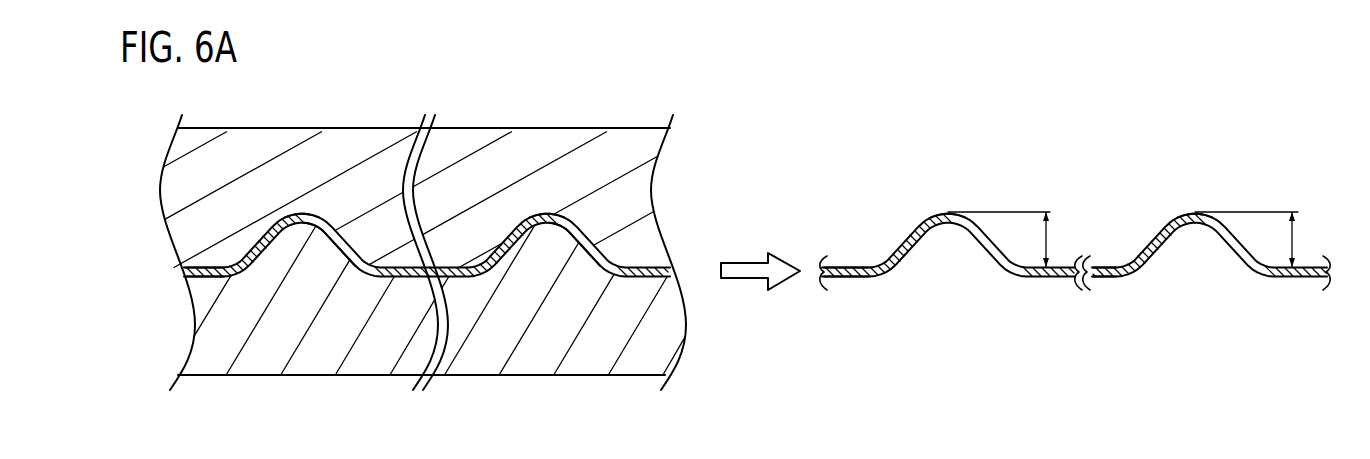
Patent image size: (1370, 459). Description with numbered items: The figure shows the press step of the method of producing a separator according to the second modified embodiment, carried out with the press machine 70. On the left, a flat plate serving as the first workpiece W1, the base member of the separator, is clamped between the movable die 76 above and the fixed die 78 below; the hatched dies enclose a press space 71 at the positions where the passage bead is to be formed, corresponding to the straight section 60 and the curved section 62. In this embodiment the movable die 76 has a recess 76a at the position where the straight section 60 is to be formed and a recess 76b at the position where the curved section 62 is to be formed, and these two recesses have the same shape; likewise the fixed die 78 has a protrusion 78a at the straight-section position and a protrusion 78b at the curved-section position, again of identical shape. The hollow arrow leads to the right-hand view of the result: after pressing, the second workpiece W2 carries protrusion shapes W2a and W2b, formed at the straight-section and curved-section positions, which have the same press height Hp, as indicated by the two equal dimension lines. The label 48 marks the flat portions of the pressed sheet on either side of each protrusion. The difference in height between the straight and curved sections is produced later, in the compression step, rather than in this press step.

The straight section 60 is at (343, 220).
The curved section 62 is at (592, 232).
The press machine 70 is at (452, 76).
The press space 71 is at (186, 258).
The movable die 76 is at (270, 137).
The recess 76a is at (312, 224).
The recess 76b is at (562, 225).
The fixed die 78 is at (293, 366).
The protrusion 78a is at (303, 214).
The protrusion 78b is at (547, 213).
The metal sheet 48 is at (848, 277).
The first workpiece W1 is at (223, 267).
The second workpiece W2 is at (872, 257).
The protrusion shape W2a is at (948, 212).
The protrusion shape W2b is at (1195, 212).
The press height Hp is at (1137, 239).